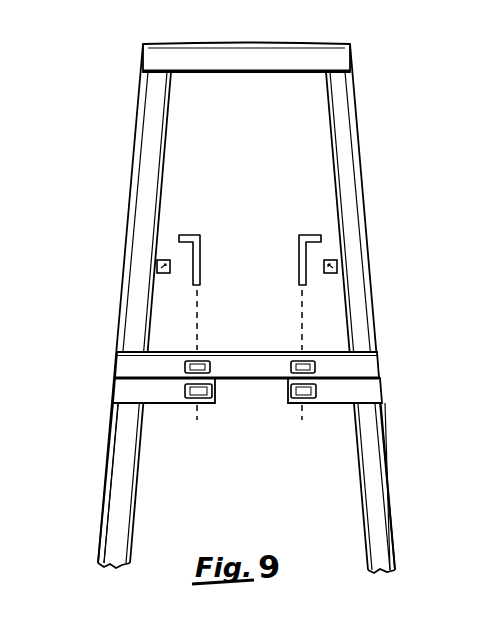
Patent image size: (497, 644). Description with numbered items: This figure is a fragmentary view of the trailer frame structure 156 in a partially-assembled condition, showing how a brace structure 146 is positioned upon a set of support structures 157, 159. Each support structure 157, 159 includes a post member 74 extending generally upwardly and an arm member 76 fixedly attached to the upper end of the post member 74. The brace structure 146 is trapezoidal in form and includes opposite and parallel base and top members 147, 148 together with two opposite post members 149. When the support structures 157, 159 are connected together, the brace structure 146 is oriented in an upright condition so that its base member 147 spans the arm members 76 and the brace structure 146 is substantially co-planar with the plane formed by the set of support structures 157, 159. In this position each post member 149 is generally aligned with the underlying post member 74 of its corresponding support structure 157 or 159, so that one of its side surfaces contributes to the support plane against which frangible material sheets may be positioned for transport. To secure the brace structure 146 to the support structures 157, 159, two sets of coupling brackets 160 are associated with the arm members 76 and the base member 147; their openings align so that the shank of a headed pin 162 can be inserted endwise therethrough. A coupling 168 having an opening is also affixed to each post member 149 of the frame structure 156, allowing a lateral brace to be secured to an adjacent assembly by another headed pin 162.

The top member 148 is at (245, 44).
The frame structure 156 is at (126, 109).
The brace structure 146 is at (355, 133).
The post members 149 is at (145, 161).
The headed pins 162 is at (207, 270).
The coupling 168 is at (157, 267).
The coupling brackets 160 is at (291, 382).
The base member 147 is at (249, 374).
The arm member 76 is at (163, 408).
The support structure 157 is at (107, 490).
The support structure 159 is at (393, 490).
The post member 74 is at (98, 550).